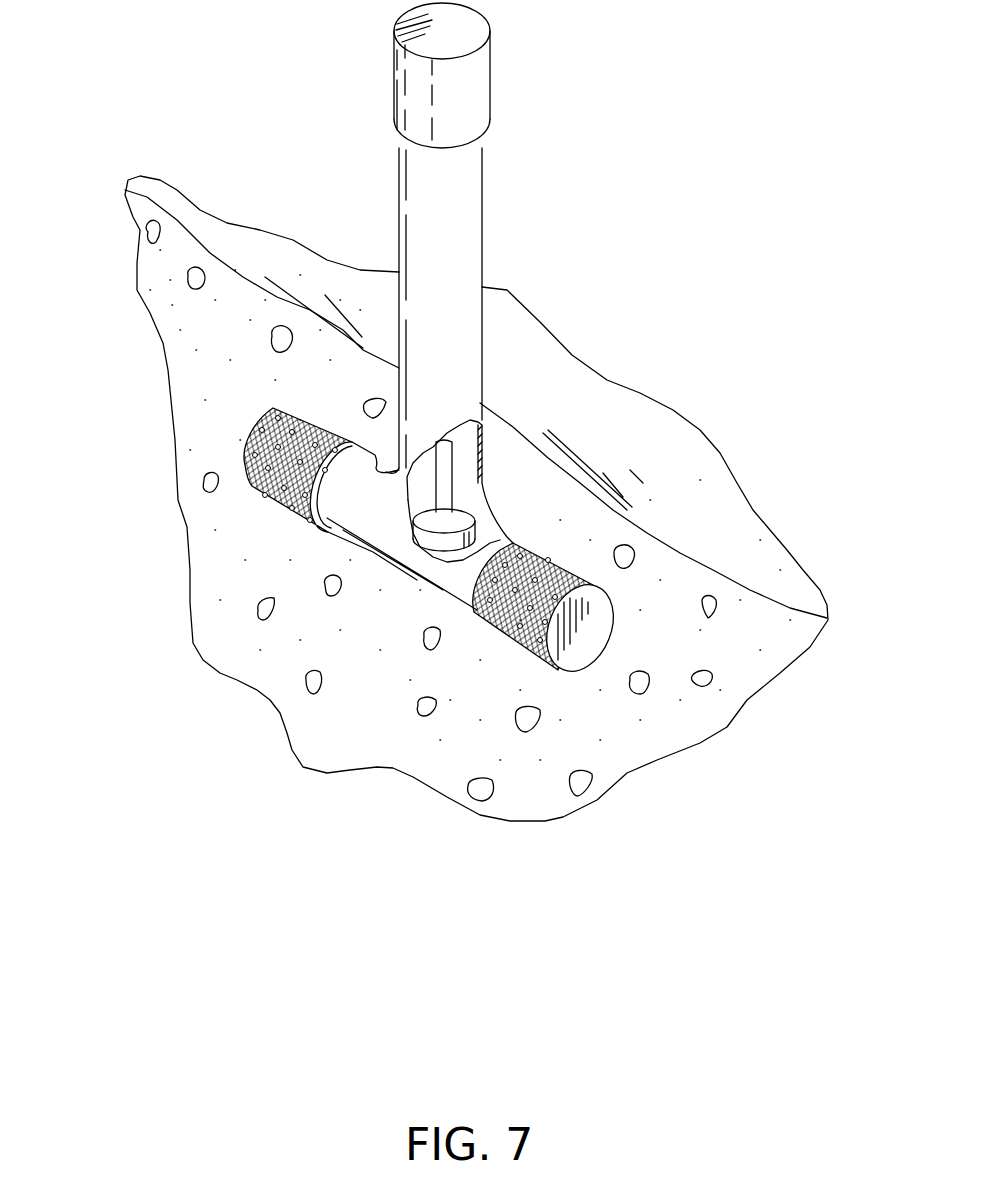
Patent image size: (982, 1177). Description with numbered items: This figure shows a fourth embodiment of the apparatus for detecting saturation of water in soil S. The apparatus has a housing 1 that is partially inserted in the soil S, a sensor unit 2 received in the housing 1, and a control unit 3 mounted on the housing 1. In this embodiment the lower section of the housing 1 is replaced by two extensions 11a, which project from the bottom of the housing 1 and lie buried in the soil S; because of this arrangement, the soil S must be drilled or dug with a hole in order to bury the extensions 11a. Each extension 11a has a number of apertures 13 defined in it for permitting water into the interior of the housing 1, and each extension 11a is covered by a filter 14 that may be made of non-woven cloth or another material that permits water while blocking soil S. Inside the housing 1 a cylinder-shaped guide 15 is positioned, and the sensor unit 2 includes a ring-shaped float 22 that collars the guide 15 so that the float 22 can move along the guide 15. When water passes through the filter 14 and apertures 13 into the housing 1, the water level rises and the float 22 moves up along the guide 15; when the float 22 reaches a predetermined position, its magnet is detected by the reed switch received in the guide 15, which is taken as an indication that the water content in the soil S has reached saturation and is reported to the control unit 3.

The housing 1 is at (481, 313).
The sensor unit 2 is at (389, 541).
The control unit 3 is at (460, 118).
The extension 11a is at (361, 482).
The apertures 13 is at (550, 409).
The filter 14 is at (278, 408).
The guide 15 is at (440, 494).
The float 22 is at (433, 543).
The soil S is at (663, 563).